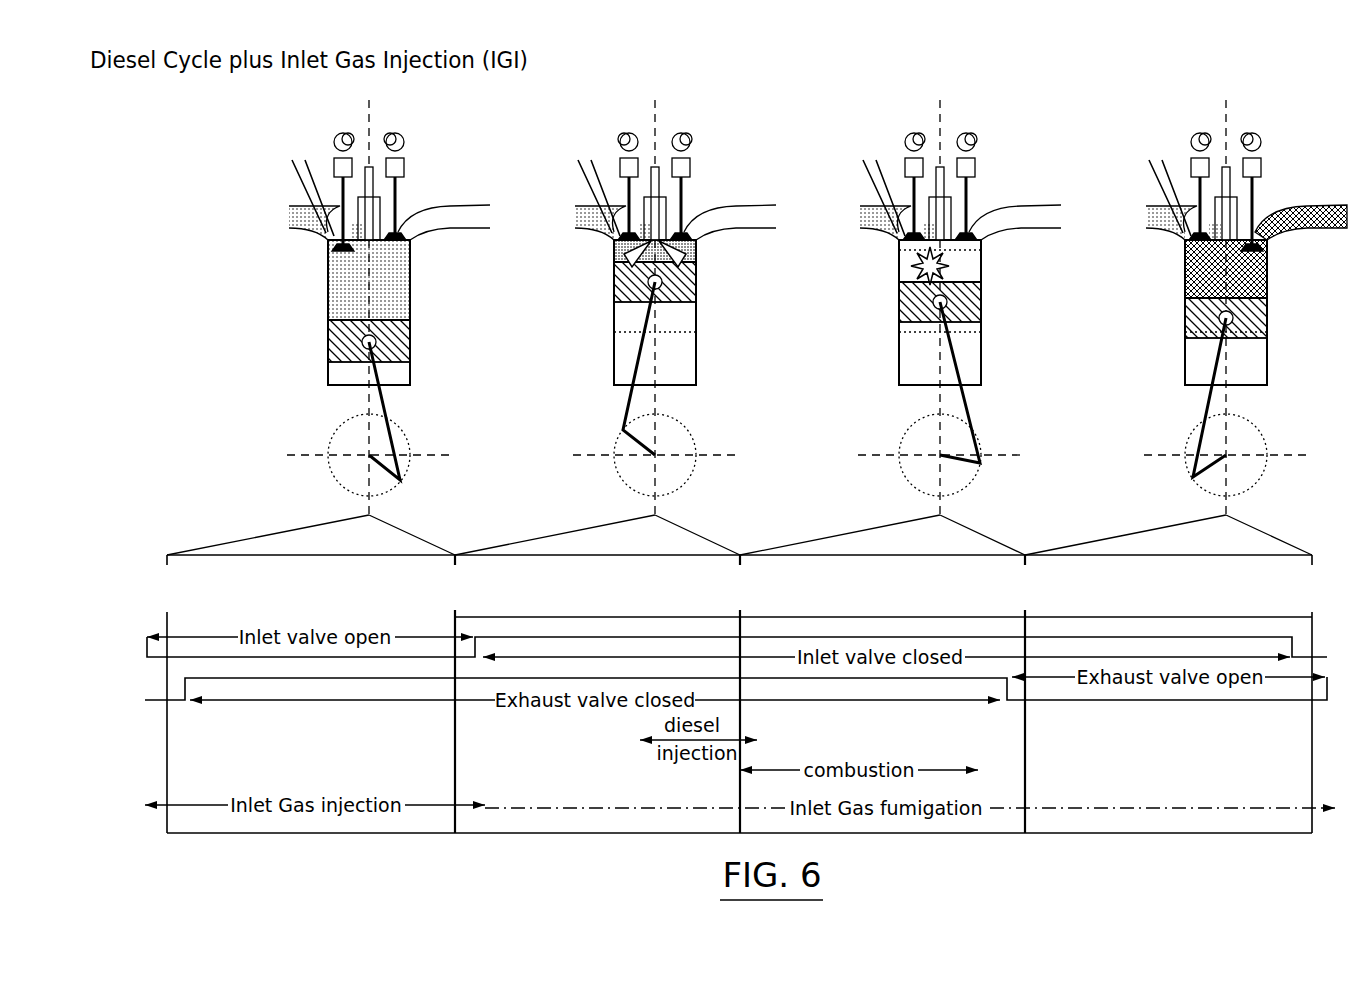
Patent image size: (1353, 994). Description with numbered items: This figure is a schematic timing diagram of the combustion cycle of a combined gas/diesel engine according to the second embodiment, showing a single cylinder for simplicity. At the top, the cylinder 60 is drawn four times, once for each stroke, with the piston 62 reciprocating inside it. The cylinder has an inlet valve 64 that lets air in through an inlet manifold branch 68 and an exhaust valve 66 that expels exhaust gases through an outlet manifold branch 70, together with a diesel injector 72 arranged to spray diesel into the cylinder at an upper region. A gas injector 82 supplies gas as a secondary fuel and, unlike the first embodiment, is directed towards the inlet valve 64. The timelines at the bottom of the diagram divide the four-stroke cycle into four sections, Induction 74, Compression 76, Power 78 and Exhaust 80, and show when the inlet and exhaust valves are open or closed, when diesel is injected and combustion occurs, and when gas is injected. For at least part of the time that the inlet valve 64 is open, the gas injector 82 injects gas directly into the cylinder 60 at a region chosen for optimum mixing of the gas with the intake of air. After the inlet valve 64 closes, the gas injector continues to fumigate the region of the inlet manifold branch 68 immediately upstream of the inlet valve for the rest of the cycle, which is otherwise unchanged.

The cylinder 60 is at (327, 281).
The piston 62 is at (327, 346).
The inlet valve 64 is at (343, 190).
The exhaust valve 66 is at (398, 194).
The inlet manifold branch 68 is at (300, 217).
The outlet manifold branch 70 is at (443, 215).
The diesel injector 72 is at (366, 166).
The gas injector 82 is at (303, 185).
The Induction 74 is at (310, 833).
The Compression 76 is at (597, 833).
The Power 78 is at (915, 833).
The Exhaust 80 is at (1170, 833).